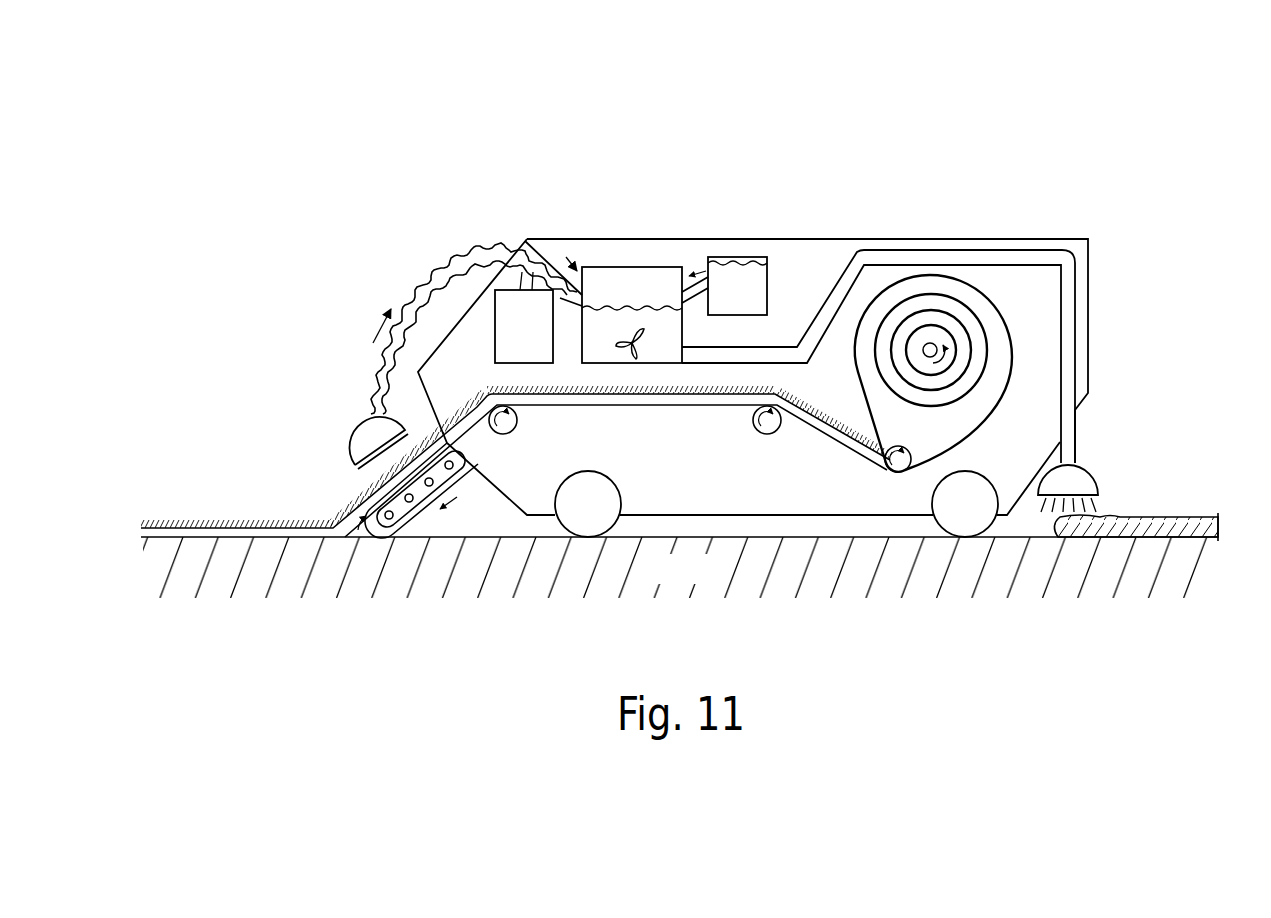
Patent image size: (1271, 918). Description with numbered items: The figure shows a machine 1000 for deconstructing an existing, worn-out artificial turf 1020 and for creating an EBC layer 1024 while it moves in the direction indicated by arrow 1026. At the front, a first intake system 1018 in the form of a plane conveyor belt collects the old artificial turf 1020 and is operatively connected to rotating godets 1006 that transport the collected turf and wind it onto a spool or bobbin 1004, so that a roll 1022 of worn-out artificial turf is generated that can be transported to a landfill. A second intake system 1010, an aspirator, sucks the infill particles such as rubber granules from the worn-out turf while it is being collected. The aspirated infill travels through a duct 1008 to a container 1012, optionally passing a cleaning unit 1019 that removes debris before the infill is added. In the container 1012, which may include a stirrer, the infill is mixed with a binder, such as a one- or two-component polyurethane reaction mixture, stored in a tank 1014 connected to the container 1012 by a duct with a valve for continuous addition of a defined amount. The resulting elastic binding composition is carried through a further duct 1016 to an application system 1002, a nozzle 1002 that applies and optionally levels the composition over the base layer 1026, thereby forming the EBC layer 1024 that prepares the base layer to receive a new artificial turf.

The machine 1000 is at (1072, 238).
The application system 1002 is at (1075, 478).
The spool or bobbin 1004 is at (931, 340).
The rotating godets 1006 is at (503, 434).
The duct 1008 is at (473, 250).
The second intake system 1010 is at (354, 441).
The container 1012 is at (625, 275).
The tank 1014 is at (758, 257).
The further duct 1016 is at (1068, 287).
The first intake system 1018 is at (397, 526).
The cleaning unit 1019 is at (524, 317).
The artificial turf 1020 is at (178, 527).
The roll 1022 is at (925, 285).
The EBC layer 1024 is at (1193, 527).
The arrow / base layer 1026 is at (845, 137).